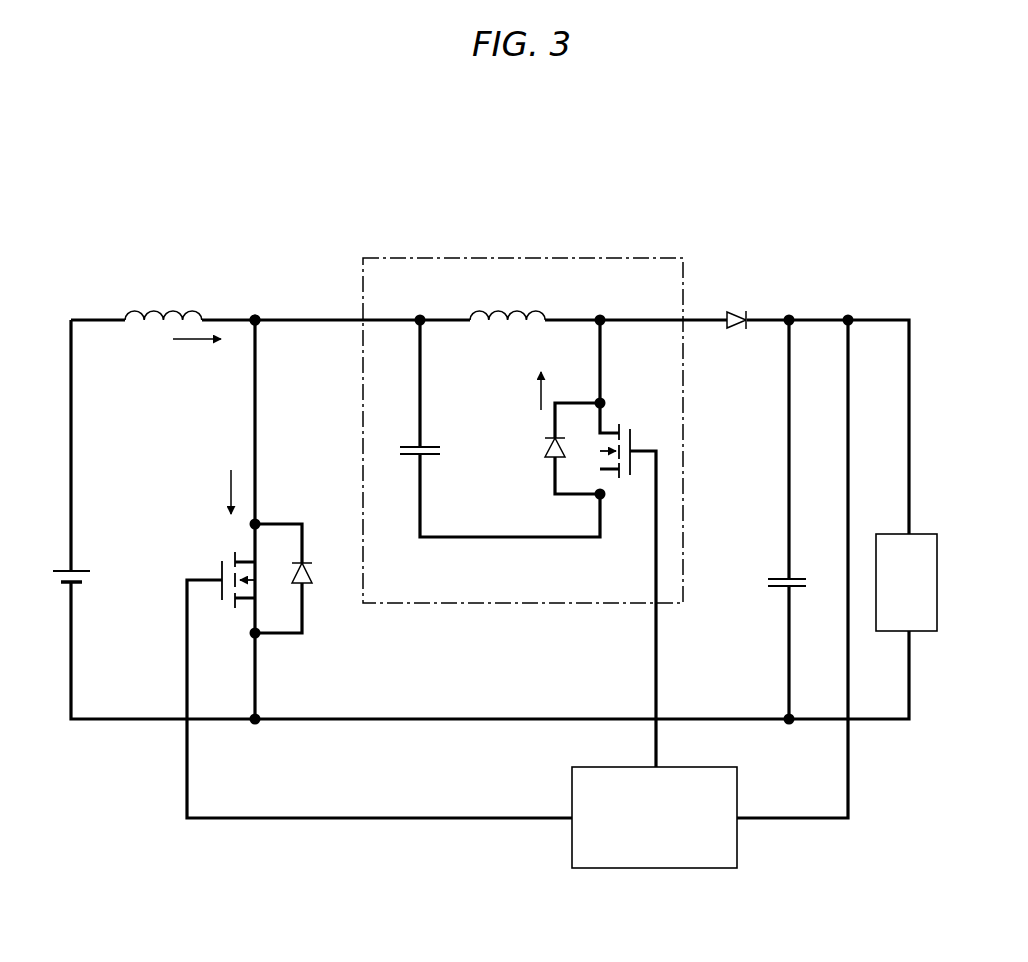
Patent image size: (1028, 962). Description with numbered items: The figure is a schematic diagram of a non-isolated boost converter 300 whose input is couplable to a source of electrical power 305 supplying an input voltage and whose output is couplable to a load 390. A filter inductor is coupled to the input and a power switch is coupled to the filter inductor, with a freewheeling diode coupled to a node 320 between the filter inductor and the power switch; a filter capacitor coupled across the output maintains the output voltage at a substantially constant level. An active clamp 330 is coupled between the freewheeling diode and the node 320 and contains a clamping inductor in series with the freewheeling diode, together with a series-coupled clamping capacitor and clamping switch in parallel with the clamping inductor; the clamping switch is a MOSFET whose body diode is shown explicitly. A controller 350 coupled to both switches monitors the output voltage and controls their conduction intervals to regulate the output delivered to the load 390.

The non-isolated boost converter 300 is at (641, 160).
The source of electrical power 305 is at (93, 578).
The node 320 is at (256, 313).
The active clamp 330 is at (522, 257).
The controller 350 is at (654, 869).
The load 390 is at (938, 583).